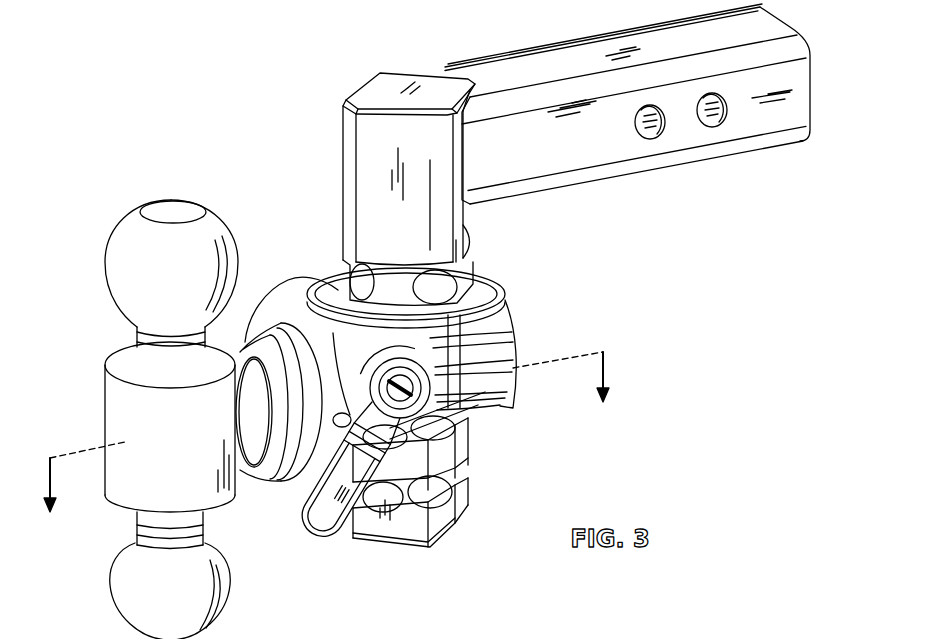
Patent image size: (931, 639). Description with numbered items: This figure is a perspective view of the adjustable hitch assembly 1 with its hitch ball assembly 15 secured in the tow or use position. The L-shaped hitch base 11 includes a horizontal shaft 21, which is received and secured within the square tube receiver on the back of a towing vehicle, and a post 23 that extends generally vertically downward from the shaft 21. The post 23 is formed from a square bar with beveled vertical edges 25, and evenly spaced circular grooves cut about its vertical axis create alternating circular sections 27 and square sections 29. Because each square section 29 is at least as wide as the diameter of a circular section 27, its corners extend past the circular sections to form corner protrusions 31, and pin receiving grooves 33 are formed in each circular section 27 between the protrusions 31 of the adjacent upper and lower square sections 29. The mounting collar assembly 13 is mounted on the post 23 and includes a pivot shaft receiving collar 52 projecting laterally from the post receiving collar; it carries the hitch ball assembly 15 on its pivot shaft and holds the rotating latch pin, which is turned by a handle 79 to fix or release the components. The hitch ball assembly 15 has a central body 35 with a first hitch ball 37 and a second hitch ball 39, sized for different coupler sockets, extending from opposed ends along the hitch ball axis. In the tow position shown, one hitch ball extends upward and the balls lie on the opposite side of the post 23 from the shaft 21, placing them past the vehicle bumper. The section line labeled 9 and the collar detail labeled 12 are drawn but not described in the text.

The adjustable hitch assembly 1 is at (122, 108).
The hitch base 11 is at (542, 50).
The shaft 21 is at (692, 37).
The beveled vertical edges 25 is at (378, 72).
The post 23 is at (465, 230).
The pin receiving grooves 33 is at (440, 294).
The mounting collar assembly 13 is at (515, 350).
The pivot shaft receiving collar 52 is at (285, 342).
The collar 12 is at (240, 462).
The handle 79 is at (330, 515).
The circular sections 27 is at (460, 482).
The square sections 29 is at (460, 512).
The corner protrusions 31 is at (437, 540).
The first hitch ball 37 is at (123, 262).
The hitch ball assembly 15 is at (105, 428).
The central body 35 is at (130, 487).
The second hitch ball 39 is at (137, 603).
The section line 9- 9 is at (326, 442).